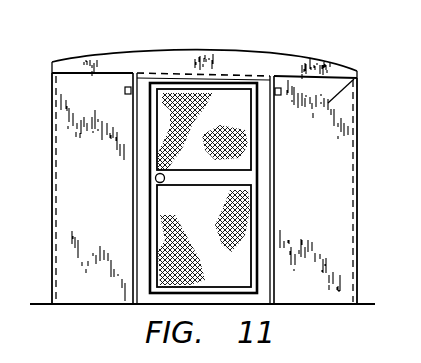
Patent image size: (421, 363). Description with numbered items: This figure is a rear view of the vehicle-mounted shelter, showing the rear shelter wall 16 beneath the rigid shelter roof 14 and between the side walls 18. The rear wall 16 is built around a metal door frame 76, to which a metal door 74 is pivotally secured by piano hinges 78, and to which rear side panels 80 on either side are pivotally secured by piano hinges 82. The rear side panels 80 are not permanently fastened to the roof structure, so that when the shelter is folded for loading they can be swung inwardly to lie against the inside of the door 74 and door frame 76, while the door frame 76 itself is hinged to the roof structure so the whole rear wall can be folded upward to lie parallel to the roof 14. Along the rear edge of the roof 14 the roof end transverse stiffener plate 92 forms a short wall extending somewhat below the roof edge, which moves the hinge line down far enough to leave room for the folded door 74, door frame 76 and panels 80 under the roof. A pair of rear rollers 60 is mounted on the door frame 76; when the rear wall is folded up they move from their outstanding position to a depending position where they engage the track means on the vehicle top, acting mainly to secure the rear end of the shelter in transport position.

The shelter roof 14 is at (205, 50).
The roof end transverse stiffener plate 92 is at (100, 62).
The rear shelter wall 16 is at (343, 70).
The side walls 18 is at (52, 202).
The rear side panels 80 is at (76, 194).
The piano hinges 82 is at (135, 184).
The metal door frame 76 is at (147, 193).
The metal door 74 is at (239, 116).
The piano hinges 78 is at (257, 203).
The rear rollers 60 is at (125, 91).